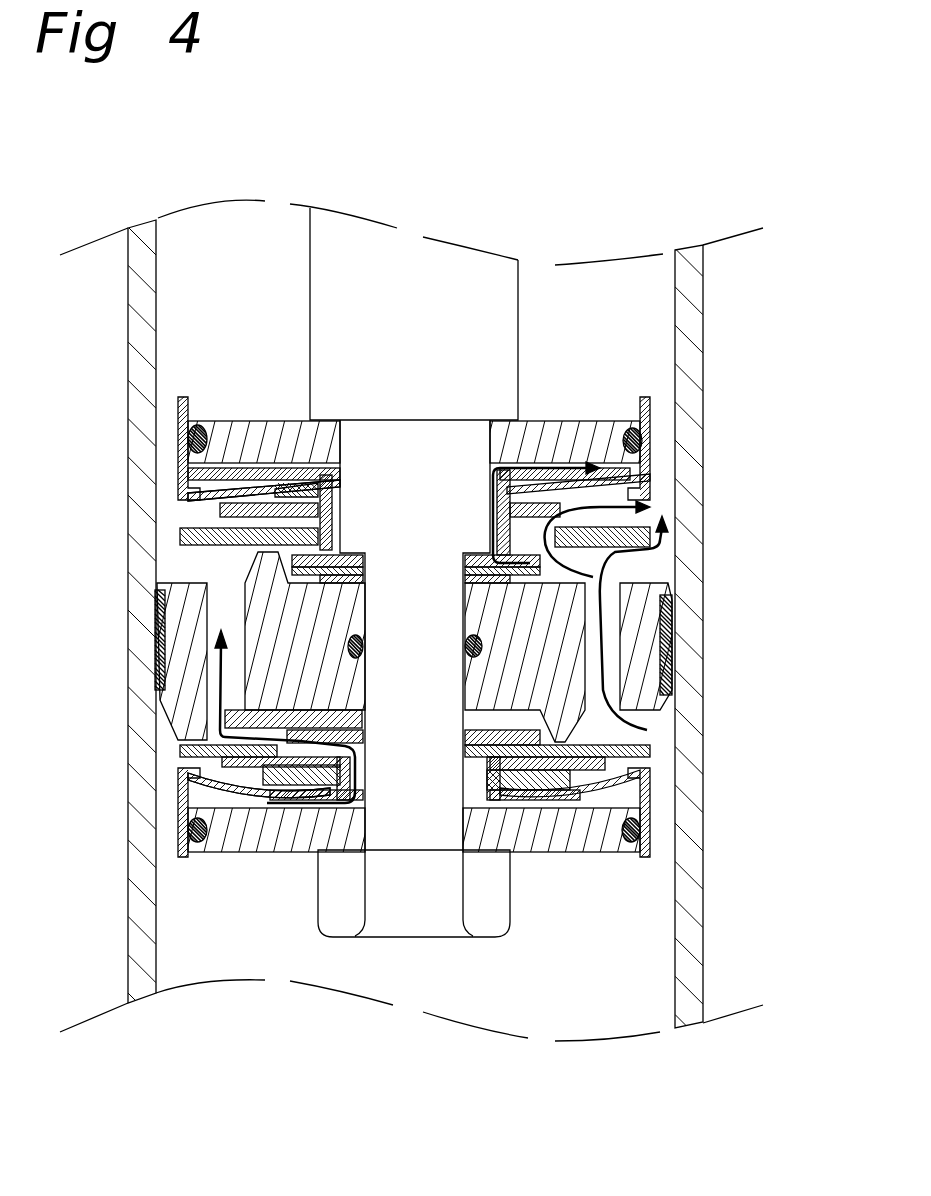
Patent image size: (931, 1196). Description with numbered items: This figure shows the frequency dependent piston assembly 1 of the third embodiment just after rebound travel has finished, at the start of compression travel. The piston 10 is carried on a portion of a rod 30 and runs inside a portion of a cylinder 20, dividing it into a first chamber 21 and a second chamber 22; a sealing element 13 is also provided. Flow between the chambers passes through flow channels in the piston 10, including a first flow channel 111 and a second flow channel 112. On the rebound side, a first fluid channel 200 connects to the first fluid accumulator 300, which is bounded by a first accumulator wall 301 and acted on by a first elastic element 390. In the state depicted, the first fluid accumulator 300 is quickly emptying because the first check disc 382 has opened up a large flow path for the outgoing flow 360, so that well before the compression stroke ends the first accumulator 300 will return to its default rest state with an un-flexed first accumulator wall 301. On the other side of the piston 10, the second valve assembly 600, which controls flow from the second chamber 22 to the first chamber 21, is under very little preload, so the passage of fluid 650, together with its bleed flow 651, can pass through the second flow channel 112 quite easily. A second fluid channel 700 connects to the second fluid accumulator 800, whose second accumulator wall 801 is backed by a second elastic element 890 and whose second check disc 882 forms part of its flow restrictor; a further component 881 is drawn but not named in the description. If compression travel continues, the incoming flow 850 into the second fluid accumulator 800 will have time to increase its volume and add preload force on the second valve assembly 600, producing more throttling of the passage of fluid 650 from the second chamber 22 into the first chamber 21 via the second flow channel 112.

The frequency dependent piston assembly 1 is at (604, 236).
The piston 10 is at (657, 622).
The sealing element 13 is at (485, 648).
The portion of a cylinder 20 is at (130, 318).
The first chamber 21 is at (232, 271).
The second chamber 22 is at (581, 1001).
The portion of a rod 30 is at (337, 363).
The first flow channel 111 is at (213, 598).
The second flow channel 112 is at (613, 697).
The first fluid channel 200 is at (372, 776).
The first fluid accumulator 300 is at (183, 805).
The first accumulator wall 301 is at (195, 792).
The outgoing flow 360 is at (180, 740).
The first check disc 382 is at (262, 697).
The first elastic element 390 is at (192, 798).
The second valve assembly 600 is at (223, 522).
The passage of fluid 650 is at (667, 525).
The bleed flow 651 is at (655, 510).
The second fluid channel 700 is at (474, 493).
The second fluid accumulator 800 is at (637, 463).
The second accumulator wall 801 is at (193, 490).
The incoming flow 850 is at (490, 467).
The first plate 881 is at (560, 560).
The second check disc 882 is at (600, 578).
The second elastic element 890 is at (197, 481).